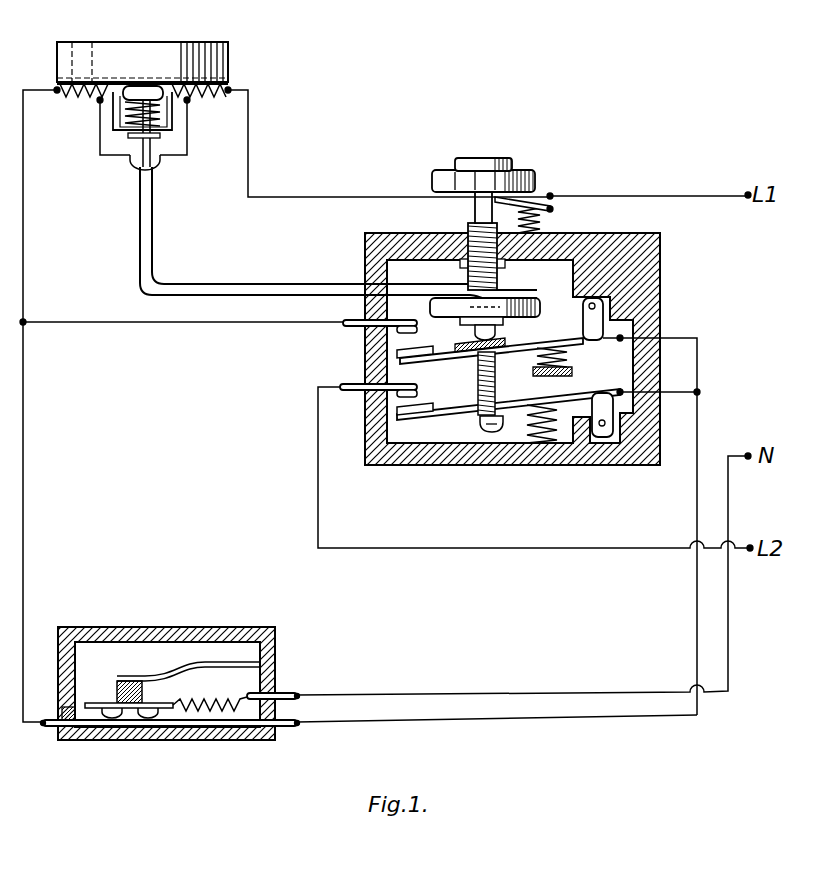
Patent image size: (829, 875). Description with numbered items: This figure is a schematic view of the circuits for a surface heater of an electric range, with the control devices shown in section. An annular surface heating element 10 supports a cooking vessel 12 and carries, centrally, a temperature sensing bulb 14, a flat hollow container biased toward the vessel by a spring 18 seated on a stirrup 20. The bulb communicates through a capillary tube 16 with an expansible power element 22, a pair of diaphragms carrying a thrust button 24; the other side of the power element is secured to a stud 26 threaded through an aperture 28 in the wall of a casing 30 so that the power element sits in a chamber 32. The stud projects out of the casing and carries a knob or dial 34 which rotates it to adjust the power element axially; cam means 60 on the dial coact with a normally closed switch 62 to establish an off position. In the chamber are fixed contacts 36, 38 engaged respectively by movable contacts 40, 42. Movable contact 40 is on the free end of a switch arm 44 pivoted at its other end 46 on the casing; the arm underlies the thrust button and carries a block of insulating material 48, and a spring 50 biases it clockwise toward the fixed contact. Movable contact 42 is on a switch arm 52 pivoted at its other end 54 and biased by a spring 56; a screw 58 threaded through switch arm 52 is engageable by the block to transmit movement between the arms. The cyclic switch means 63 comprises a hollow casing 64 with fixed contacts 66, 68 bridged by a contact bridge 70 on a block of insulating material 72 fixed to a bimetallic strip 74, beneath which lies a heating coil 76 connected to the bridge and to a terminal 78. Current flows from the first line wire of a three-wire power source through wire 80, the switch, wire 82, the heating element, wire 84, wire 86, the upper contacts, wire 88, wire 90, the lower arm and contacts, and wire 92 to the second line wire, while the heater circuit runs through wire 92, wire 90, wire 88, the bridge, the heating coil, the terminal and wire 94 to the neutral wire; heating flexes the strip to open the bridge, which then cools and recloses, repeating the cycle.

The surface heating element 10 is at (218, 98).
The cooking vessel 12 is at (188, 46).
The temperature sensing bulb 14 is at (148, 88).
The capillary tube 16 is at (207, 283).
The spring 18 is at (120, 107).
The stirrup 20 is at (120, 132).
The expansible power element 22 is at (538, 303).
The thrust button 24 is at (494, 336).
The stud 26 is at (466, 232).
The aperture 28 is at (466, 269).
The casing 30 is at (660, 262).
The chamber 32 is at (520, 398).
The knob or dial 34 is at (482, 158).
The fixed contact 36 is at (421, 312).
The fixed contact 38 is at (397, 406).
The movable contact 40 is at (397, 352).
The movable contact 42 is at (373, 439).
The switch arm 44 is at (491, 364).
The pivoted end 46 is at (598, 306).
The block of insulating material 48 is at (456, 346).
The spring 50 is at (567, 357).
The switch arm 52 is at (575, 396).
The pivoted end 54 is at (602, 438).
The spring 56 is at (514, 443).
The screw 58 is at (478, 388).
The cam means 60 is at (532, 204).
The normally closed switch 62 is at (552, 206).
The cyclic switch means 63 is at (150, 625).
The hollow casing 64 is at (220, 628).
The fixed contact 66 is at (112, 718).
The fixed contact 68 is at (175, 713).
The contact bridge 70 is at (130, 709).
The block of insulating material 72 is at (118, 684).
The bimetallic strip 74 is at (173, 670).
The heating coil 76 is at (240, 706).
The terminal 78 is at (283, 693).
The wire 80 is at (612, 194).
The wire 82 is at (250, 137).
The wire 84 is at (25, 228).
The wire 86 is at (70, 321).
The wire 88 is at (462, 722).
The wire 90 is at (697, 394).
The wire 92 is at (448, 528).
The wire 94 is at (448, 695).